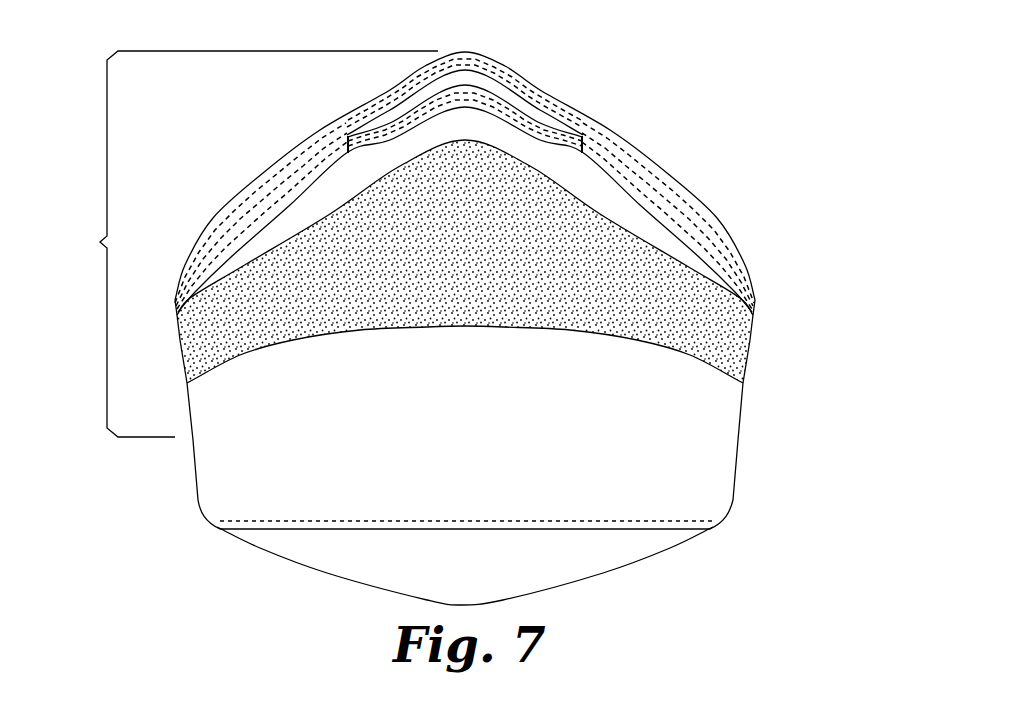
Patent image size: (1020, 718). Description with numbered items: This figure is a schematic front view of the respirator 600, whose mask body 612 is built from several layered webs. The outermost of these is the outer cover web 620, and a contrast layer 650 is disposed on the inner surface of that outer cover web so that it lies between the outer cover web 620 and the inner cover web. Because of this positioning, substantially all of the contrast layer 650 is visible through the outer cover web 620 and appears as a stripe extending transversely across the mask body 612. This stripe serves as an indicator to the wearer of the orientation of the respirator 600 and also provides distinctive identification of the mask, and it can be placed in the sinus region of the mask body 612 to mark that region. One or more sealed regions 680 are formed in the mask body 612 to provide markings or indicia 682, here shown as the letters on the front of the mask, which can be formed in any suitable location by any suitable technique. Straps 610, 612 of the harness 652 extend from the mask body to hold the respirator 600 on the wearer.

The respirator 600 is at (632, 73).
The first strap 610 is at (268, 142).
The mask body 612 is at (684, 164).
The outer cover web 620 is at (715, 473).
The contrast layer 650 is at (747, 347).
The harness 652 is at (416, 244).
The sealed region 680 is at (461, 293).
The indicia 682 is at (437, 292).